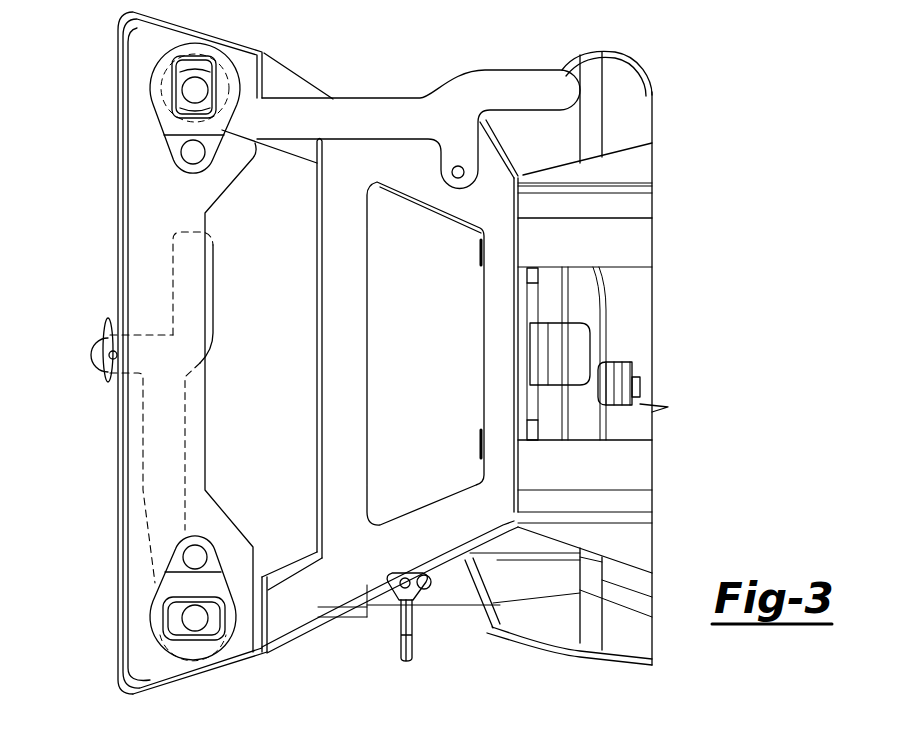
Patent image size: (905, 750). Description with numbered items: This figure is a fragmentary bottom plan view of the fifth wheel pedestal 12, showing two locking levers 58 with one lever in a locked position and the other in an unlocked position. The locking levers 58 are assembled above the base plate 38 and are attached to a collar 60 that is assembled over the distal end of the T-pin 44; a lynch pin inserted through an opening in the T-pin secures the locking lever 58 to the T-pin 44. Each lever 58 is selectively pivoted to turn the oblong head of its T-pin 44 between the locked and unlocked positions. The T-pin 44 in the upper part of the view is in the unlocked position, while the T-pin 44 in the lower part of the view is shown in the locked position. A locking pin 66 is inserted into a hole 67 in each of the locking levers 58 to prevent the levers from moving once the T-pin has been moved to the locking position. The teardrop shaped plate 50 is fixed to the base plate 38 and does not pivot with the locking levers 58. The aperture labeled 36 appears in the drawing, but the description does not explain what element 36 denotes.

The fifth wheel pedestal 12 is at (635, 172).
The aperture 36 is at (188, 153).
The base plate 38 is at (157, 262).
The T-pin 44 is at (192, 95).
The teardrop shaped plate 50 is at (163, 122).
The locking lever 58 is at (367, 113).
The collar 60 is at (177, 620).
The locking pin 66 is at (100, 327).
The hole 67 is at (458, 178).